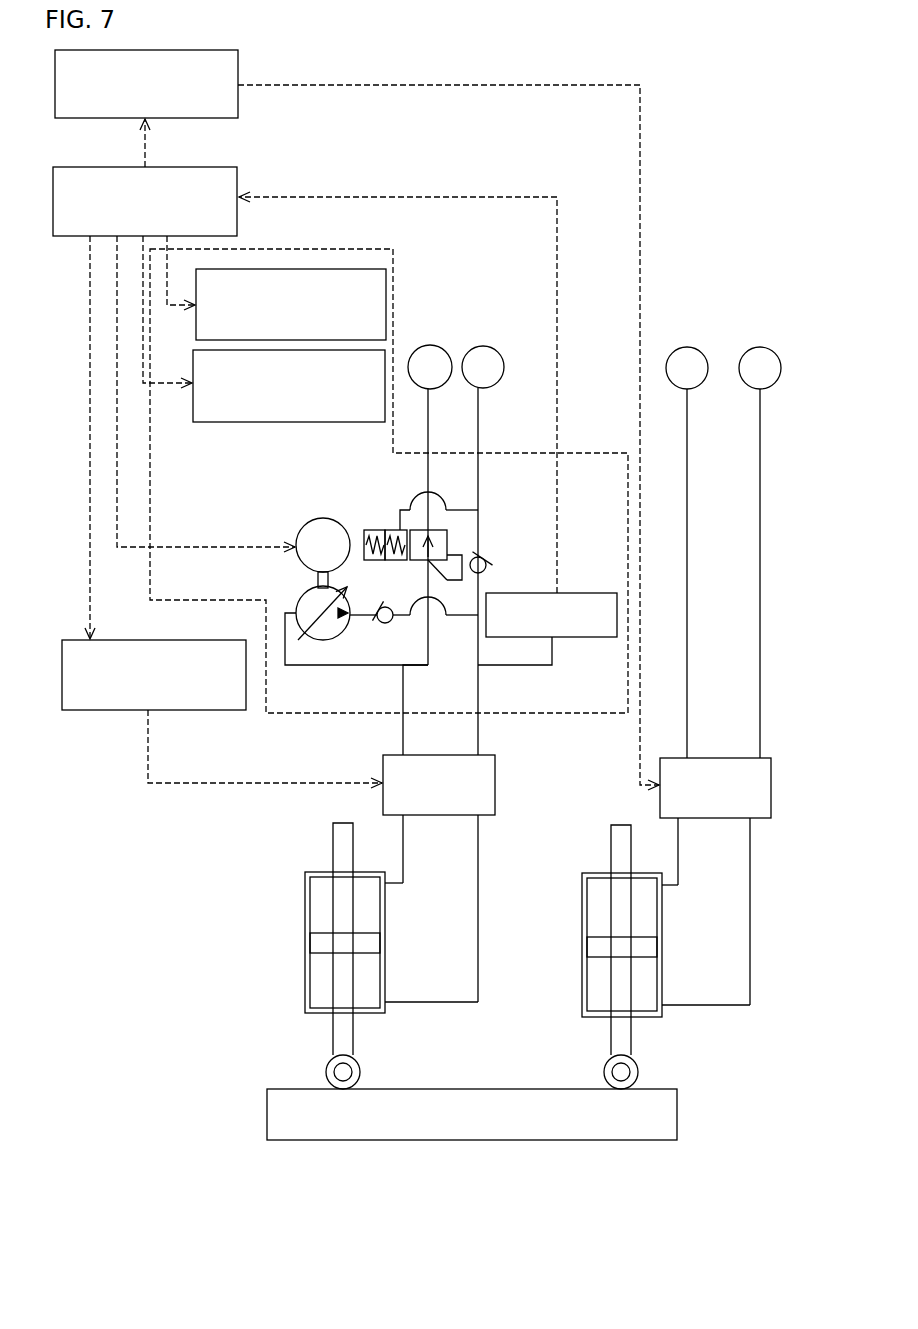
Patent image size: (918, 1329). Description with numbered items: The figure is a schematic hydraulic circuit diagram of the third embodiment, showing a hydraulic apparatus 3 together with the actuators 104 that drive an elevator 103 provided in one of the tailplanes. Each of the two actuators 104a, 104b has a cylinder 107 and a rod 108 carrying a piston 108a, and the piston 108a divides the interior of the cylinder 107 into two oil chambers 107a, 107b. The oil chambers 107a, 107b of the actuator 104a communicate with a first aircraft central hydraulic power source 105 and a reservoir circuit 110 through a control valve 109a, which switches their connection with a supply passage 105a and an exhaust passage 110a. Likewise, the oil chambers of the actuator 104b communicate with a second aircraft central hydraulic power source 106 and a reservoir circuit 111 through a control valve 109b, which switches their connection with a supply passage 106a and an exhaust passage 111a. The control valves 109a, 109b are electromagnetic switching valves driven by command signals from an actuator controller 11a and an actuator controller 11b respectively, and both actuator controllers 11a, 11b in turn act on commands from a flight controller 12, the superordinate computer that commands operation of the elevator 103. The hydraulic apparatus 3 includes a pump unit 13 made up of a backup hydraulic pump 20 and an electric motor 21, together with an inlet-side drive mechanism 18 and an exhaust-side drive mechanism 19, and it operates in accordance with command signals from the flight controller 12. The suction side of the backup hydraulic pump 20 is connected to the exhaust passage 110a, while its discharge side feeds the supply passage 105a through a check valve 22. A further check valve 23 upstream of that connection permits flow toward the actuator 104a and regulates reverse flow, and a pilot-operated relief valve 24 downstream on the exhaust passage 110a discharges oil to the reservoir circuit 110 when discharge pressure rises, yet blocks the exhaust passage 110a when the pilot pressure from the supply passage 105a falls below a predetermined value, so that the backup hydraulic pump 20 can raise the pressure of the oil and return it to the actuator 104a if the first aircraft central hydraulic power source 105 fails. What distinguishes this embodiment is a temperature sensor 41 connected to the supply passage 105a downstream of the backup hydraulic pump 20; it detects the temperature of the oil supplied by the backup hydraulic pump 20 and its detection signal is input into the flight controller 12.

The hydraulic apparatus 3 is at (584, 452).
The actuator controller 11a is at (122, 710).
The actuator controller 11b is at (238, 100).
The flight controller 12 is at (238, 172).
The pump unit 13 is at (309, 565).
The inlet-side drive mechanism 18 is at (230, 422).
The exhaust-side drive mechanism 19 is at (262, 270).
The backup hydraulic pump 20 is at (303, 592).
The electric motor 21 is at (318, 518).
The check valve 22 is at (376, 626).
The check valve 23 is at (491, 553).
The relief valve 24 is at (375, 512).
The temperature sensor 41 is at (566, 593).
The elevator 103 is at (465, 1132).
The actuators 104 is at (427, 1014).
The actuator 104a is at (294, 1023).
The actuator 104b is at (671, 1031).
The first aircraft central hydraulic power source 105 is at (481, 345).
The supply passage 105a is at (484, 422).
The second aircraft central hydraulic power source 106 is at (760, 347).
The supply passage 106a is at (760, 513).
The cylinder 107 is at (307, 915).
The oil chamber 107a is at (320, 898).
The oil chamber 107b is at (318, 983).
The rod 108 is at (357, 1029).
The piston 108a is at (322, 944).
The control valve 109a is at (495, 782).
The control valve 109b is at (718, 758).
The reservoir circuit 110 is at (433, 340).
The exhaust passage 110a is at (431, 345).
The reservoir circuit 111 is at (687, 347).
The exhaust passage 111a is at (687, 507).